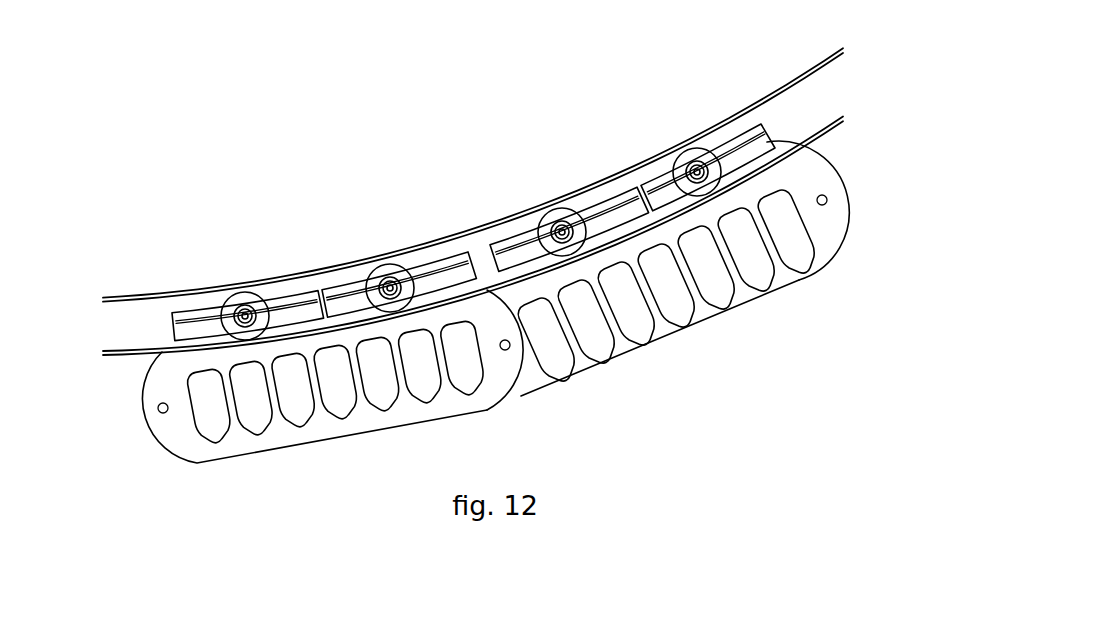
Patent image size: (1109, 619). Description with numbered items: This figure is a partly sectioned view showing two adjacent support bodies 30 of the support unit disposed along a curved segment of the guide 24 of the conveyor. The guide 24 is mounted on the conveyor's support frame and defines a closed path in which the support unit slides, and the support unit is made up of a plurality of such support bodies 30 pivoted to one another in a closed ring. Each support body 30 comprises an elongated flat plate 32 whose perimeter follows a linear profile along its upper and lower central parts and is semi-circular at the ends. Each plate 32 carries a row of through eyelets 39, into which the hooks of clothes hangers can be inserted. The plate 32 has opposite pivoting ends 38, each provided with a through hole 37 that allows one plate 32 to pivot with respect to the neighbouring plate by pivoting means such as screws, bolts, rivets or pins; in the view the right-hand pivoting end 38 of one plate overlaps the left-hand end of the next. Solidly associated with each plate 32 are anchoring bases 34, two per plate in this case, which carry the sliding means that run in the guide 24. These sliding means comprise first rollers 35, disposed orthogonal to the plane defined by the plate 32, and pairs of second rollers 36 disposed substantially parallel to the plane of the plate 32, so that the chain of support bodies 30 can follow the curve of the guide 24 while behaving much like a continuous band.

The guide 24 is at (805, 100).
The support body 30 is at (496, 346).
The flat plate 32 is at (258, 455).
The anchoring base 34 is at (190, 338).
The first roller 35 is at (197, 310).
The second roller 36 is at (241, 294).
The through hole 37 is at (159, 412).
The pivoting end 38 is at (500, 377).
The through eyelet 39 is at (383, 410).